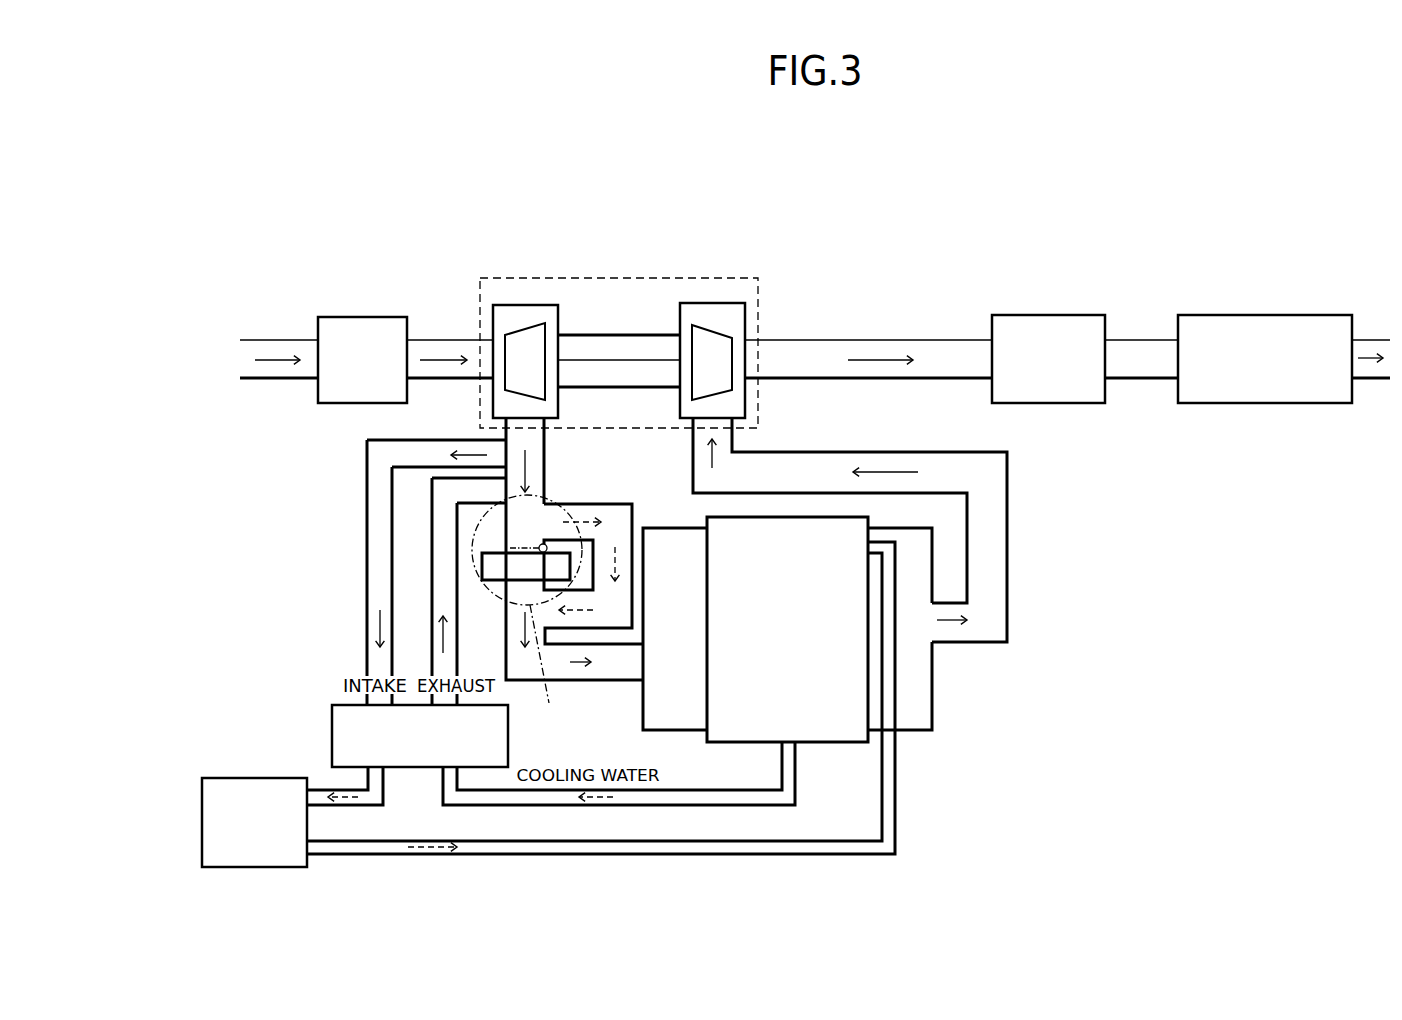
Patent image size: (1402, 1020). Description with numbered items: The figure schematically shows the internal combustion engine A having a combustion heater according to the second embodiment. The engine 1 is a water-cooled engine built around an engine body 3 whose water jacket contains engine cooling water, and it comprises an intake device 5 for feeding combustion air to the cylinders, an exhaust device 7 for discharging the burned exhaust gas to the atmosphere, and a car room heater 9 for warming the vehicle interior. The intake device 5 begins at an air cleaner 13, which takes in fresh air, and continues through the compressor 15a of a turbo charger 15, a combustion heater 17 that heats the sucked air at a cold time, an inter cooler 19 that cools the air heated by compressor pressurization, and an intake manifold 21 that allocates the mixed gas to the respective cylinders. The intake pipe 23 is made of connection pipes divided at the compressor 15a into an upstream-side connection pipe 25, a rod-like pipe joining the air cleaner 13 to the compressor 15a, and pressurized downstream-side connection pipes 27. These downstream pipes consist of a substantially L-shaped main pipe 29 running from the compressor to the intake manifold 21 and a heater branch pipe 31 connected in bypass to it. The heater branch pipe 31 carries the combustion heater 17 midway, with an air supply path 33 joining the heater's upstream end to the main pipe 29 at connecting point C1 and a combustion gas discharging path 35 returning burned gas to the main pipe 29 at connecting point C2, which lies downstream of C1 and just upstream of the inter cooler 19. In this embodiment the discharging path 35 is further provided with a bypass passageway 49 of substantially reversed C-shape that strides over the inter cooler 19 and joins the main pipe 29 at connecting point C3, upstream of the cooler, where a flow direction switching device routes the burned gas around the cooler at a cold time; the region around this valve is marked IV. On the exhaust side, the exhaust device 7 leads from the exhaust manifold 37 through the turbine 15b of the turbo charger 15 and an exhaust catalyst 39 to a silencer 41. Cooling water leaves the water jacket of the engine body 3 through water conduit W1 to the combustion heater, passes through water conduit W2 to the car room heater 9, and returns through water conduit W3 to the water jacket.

The engine 1 is at (725, 735).
The engine body 3 is at (835, 730).
The intake device 5 is at (259, 535).
The exhaust device 7 is at (958, 315).
The car room heater 9 is at (202, 822).
The air cleaner 13 is at (356, 317).
The turbo charger 15 is at (558, 218).
The compressor 15a is at (520, 304).
The turbine 15b is at (706, 303).
The combustion heater 17 is at (332, 733).
The inter cooler 19 is at (493, 581).
The intake manifold 21 is at (643, 703).
The intake pipe 23 is at (327, 462).
The upstream-side connection pipe 25 is at (437, 380).
The downstream-side connection pipe 27 is at (505, 433).
The main pipe 29 is at (545, 445).
The heater branch pipe 31 is at (367, 613).
The air supply path 33 is at (367, 657).
The combustion gas discharging path 35 is at (433, 553).
The exhaust manifold 37 is at (932, 704).
The exhaust catalyst 39 is at (1052, 315).
The silencer 41 is at (1268, 315).
The bypass passageway 49 is at (632, 504).
The internal combustion engine having the combustion heater A is at (824, 254).
The connecting point C1 is at (522, 457).
The connecting point C2 is at (520, 492).
The connecting point C3 is at (520, 533).
The detail region IV is at (527, 615).
The water conduit W1 is at (525, 806).
The water conduit W2 is at (343, 806).
The water conduit W3 is at (632, 853).